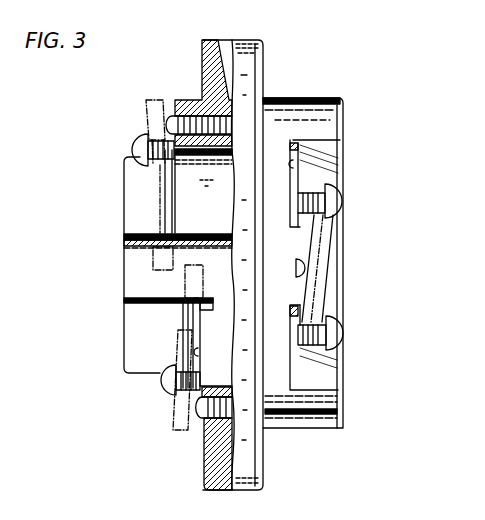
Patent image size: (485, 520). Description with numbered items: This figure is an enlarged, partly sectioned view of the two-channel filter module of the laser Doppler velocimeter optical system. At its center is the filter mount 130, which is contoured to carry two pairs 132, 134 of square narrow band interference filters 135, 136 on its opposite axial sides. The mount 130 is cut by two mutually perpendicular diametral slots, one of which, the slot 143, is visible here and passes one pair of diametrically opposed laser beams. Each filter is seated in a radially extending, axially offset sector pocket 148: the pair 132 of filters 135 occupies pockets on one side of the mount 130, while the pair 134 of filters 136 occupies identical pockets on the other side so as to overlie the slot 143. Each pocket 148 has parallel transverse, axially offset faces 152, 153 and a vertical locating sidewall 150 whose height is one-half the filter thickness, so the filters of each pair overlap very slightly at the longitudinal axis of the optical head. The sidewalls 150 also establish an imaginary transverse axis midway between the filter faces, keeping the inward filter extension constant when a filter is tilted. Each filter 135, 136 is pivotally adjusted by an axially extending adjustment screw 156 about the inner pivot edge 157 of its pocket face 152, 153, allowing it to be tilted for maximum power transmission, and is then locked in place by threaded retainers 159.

The central filter mount 130 is at (241, 62).
The pair of filters 132 is at (335, 238).
The pair of filters 134 is at (157, 290).
The narrow band interference filter 135 is at (325, 272).
The narrow band interference filter 136 is at (145, 115).
The diametral slot 143 is at (203, 191).
The sector pocket 148 is at (158, 208).
The locating sidewall 150 is at (168, 225).
The pocket face 152 is at (198, 352).
The pocket face 153 is at (168, 203).
The adjustment screw 156 is at (196, 120).
The inner pivot edge 157 is at (145, 247).
The threaded retainer 159 is at (136, 147).